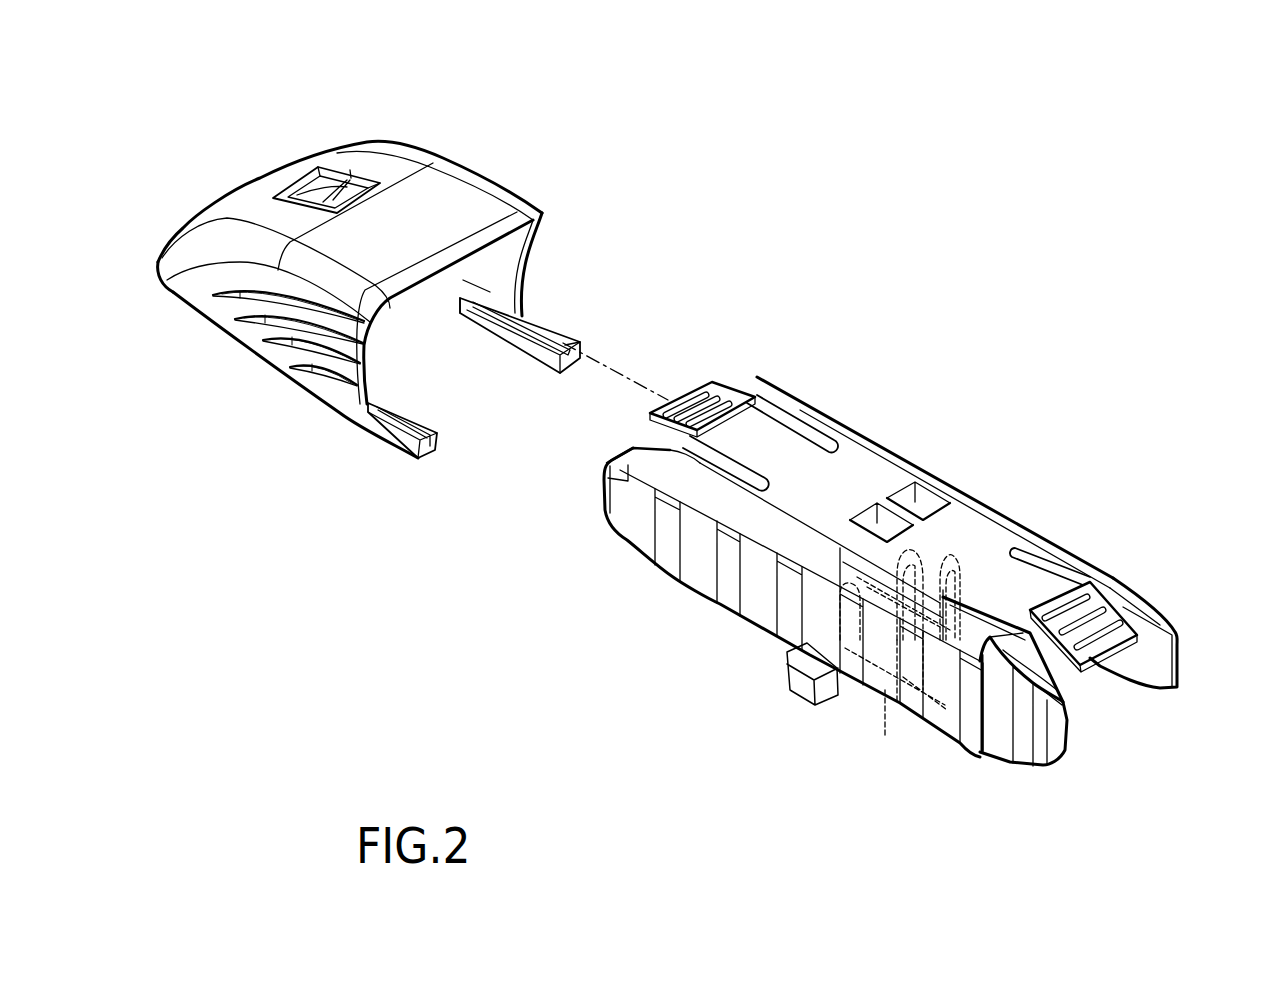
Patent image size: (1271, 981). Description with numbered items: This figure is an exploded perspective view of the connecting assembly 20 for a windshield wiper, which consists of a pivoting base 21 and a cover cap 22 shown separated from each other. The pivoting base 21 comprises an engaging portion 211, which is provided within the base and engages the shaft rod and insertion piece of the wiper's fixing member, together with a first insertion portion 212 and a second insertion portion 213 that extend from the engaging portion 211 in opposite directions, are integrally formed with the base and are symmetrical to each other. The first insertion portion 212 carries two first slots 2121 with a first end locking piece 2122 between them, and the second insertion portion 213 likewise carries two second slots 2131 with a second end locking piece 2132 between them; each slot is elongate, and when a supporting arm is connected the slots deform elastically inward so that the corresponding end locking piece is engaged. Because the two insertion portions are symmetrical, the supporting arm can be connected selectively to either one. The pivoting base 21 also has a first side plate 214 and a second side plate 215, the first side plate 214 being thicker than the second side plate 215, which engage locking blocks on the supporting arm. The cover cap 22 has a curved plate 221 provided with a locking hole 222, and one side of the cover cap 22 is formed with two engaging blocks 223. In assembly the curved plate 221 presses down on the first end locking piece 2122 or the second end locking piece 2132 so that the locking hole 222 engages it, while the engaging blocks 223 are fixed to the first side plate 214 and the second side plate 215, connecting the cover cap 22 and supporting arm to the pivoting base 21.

The connecting assembly 20 is at (698, 33).
The pivoting base 21 is at (918, 452).
The cover cap 22 is at (470, 162).
The engaging portion 211 is at (892, 668).
The first insertion portion 212 is at (1153, 477).
The first slots 2121 is at (992, 630).
The first end locking piece 2122 is at (1080, 617).
The second insertion portion 213 is at (792, 292).
The second slots 2131 is at (812, 402).
The second end locking piece 2132 is at (684, 390).
The first side plate 214 is at (760, 585).
The second side plate 215 is at (1137, 672).
The curved plate 221 is at (248, 205).
The locking hole 222 is at (305, 182).
The engaging blocks 223 is at (558, 328).